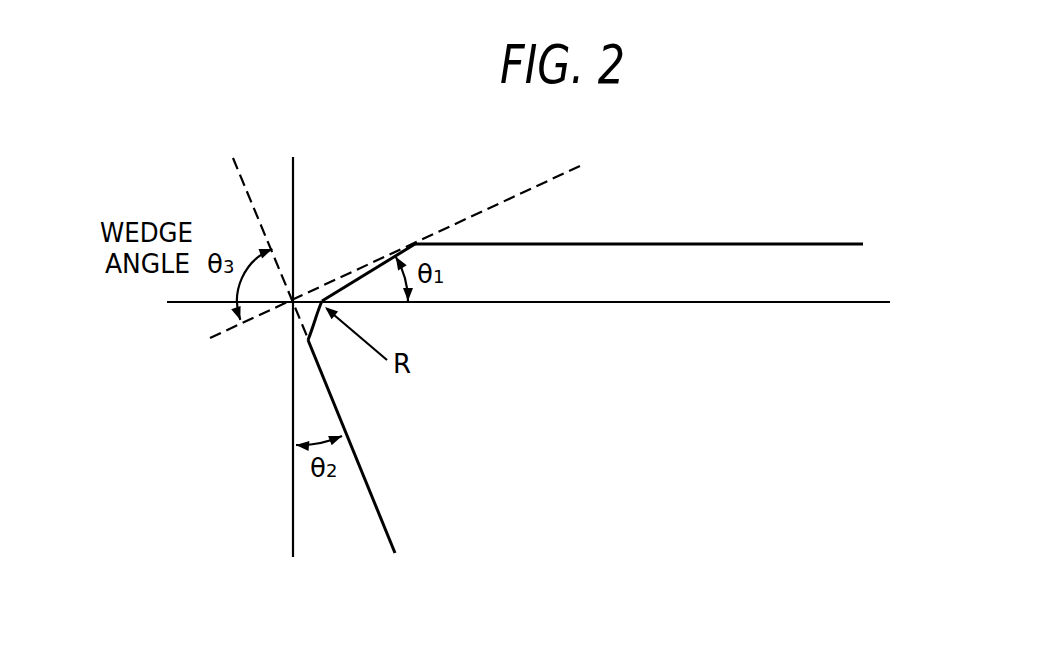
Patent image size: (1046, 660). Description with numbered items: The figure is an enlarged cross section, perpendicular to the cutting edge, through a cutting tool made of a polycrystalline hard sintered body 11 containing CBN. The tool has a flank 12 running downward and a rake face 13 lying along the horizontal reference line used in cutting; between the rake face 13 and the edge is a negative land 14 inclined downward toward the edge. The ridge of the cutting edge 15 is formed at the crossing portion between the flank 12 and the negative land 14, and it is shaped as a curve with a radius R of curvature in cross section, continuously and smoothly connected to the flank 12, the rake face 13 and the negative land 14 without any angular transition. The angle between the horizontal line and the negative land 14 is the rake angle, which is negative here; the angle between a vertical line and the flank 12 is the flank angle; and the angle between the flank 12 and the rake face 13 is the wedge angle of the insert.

The polycrystalline hard sintered body 11 is at (503, 443).
The flank 12 is at (377, 515).
The rake face 13 is at (640, 244).
The negative land 14 is at (367, 256).
The ridge of the cutting edge 15 is at (310, 321).